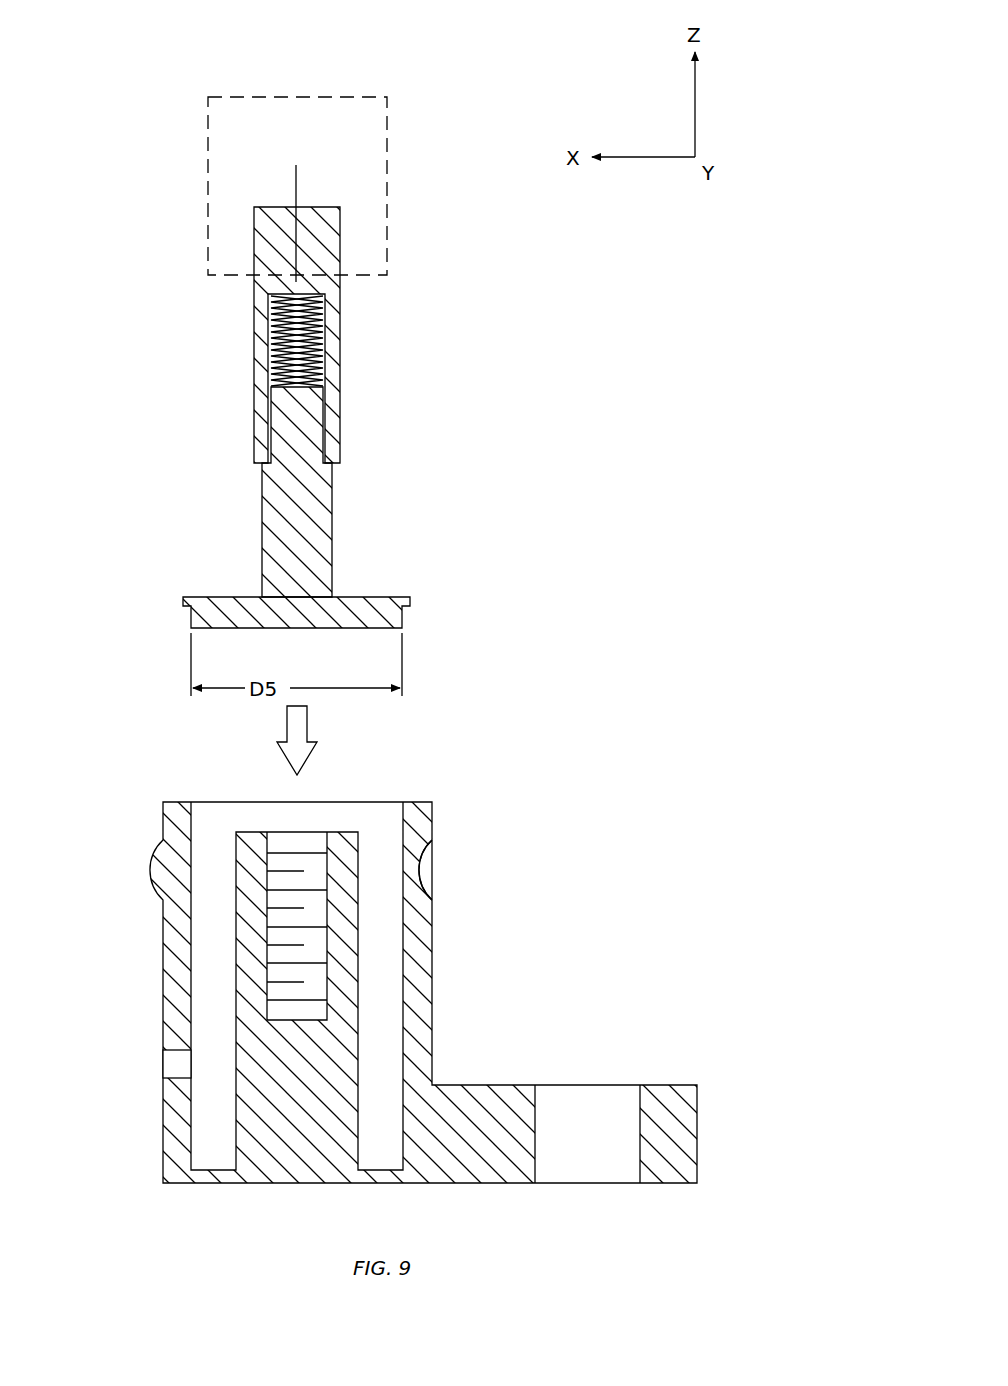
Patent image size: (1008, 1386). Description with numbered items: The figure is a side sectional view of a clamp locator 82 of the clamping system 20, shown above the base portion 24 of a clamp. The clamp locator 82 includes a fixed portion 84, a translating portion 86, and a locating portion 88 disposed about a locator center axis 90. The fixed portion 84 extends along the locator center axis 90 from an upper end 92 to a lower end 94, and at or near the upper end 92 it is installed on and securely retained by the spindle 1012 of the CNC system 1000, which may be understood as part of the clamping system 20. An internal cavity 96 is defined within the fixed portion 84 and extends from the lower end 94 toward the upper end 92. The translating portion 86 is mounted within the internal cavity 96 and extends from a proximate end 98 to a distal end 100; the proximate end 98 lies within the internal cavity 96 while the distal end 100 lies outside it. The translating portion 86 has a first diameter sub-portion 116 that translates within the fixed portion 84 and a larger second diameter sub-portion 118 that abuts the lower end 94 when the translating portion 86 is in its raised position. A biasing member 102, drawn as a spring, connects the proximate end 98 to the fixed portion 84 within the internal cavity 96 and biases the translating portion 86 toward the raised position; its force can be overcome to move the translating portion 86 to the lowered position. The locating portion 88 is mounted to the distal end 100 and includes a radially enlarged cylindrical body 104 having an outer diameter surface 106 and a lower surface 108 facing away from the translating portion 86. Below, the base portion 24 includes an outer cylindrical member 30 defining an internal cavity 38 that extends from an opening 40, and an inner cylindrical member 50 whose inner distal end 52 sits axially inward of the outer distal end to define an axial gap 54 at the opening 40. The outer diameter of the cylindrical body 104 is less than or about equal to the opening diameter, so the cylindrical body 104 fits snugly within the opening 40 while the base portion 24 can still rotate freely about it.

The CNC system 1000 is at (420, 93).
The spindle 1012 is at (387, 153).
The locator center axis 90 is at (292, 170).
The upper end 92 is at (299, 322).
The fixed portion 84 is at (342, 325).
The biasing member 102 is at (275, 320).
The internal cavity 96 is at (289, 340).
The proximate end 98 is at (288, 394).
The first diameter sub-portion 116 is at (296, 492).
The lower end 94 is at (332, 462).
The translating portion 86 is at (304, 492).
The second diameter sub-portion 118 is at (290, 483).
The distal end 100 is at (290, 593).
The cylindrical body 104 is at (340, 600).
The locating portion 88 is at (340, 600).
The outer diameter surface 106 is at (340, 633).
The lower surface 108 is at (205, 632).
The clamp locator 82 is at (205, 358).
The clamping system 20 is at (486, 378).
The base portion 24 is at (401, 974).
The outer cylindrical member 30 is at (401, 974).
The opening 40 is at (210, 808).
The internal cavity 38 is at (210, 880).
The axial gap 54 is at (350, 814).
The inner distal end 52 is at (255, 843).
The inner cylindrical member 50 is at (336, 921).